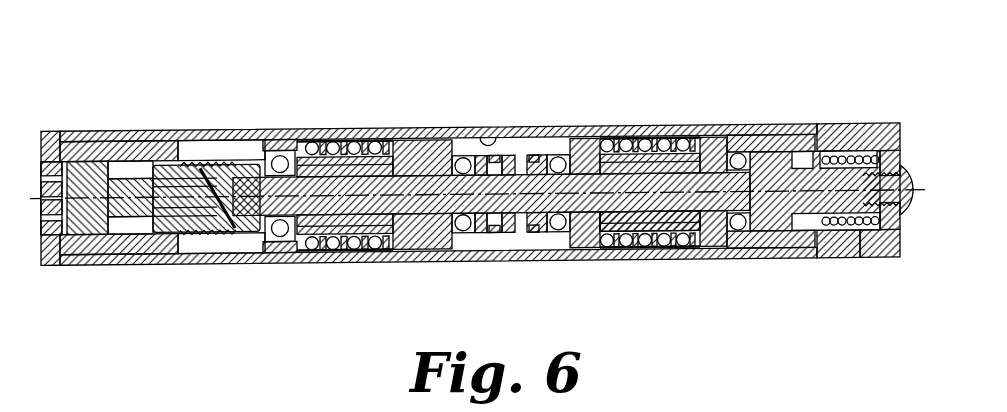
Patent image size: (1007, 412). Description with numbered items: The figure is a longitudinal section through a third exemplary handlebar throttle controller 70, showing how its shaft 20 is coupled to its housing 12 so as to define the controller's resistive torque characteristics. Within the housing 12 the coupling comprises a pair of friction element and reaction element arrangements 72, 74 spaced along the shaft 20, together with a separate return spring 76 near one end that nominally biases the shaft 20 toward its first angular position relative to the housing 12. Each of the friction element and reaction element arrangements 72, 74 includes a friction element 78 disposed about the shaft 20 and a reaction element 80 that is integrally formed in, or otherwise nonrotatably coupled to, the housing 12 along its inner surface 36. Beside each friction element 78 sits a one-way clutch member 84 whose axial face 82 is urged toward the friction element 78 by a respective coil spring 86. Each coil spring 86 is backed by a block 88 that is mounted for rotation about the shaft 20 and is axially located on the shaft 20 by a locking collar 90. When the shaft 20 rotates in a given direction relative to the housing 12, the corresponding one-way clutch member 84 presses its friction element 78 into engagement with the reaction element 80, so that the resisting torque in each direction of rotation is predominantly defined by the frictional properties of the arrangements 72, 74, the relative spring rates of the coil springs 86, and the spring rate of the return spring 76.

The throttle controller 70 is at (132, 71).
The housing 12 is at (545, 135).
The shaft 20 is at (805, 140).
The inner surface 36 is at (483, 146).
The friction element and reaction element arrangement 72 is at (375, 275).
The friction element and reaction element arrangement 74 is at (645, 278).
The return spring 76 is at (864, 150).
The friction element 78 is at (321, 143).
The reaction element 80 is at (218, 266).
The axial face 82 is at (283, 266).
The one-way clutch member 84 is at (356, 149).
The coil spring 86 is at (397, 150).
The block 88 is at (440, 265).
The locking collar 90 is at (494, 264).